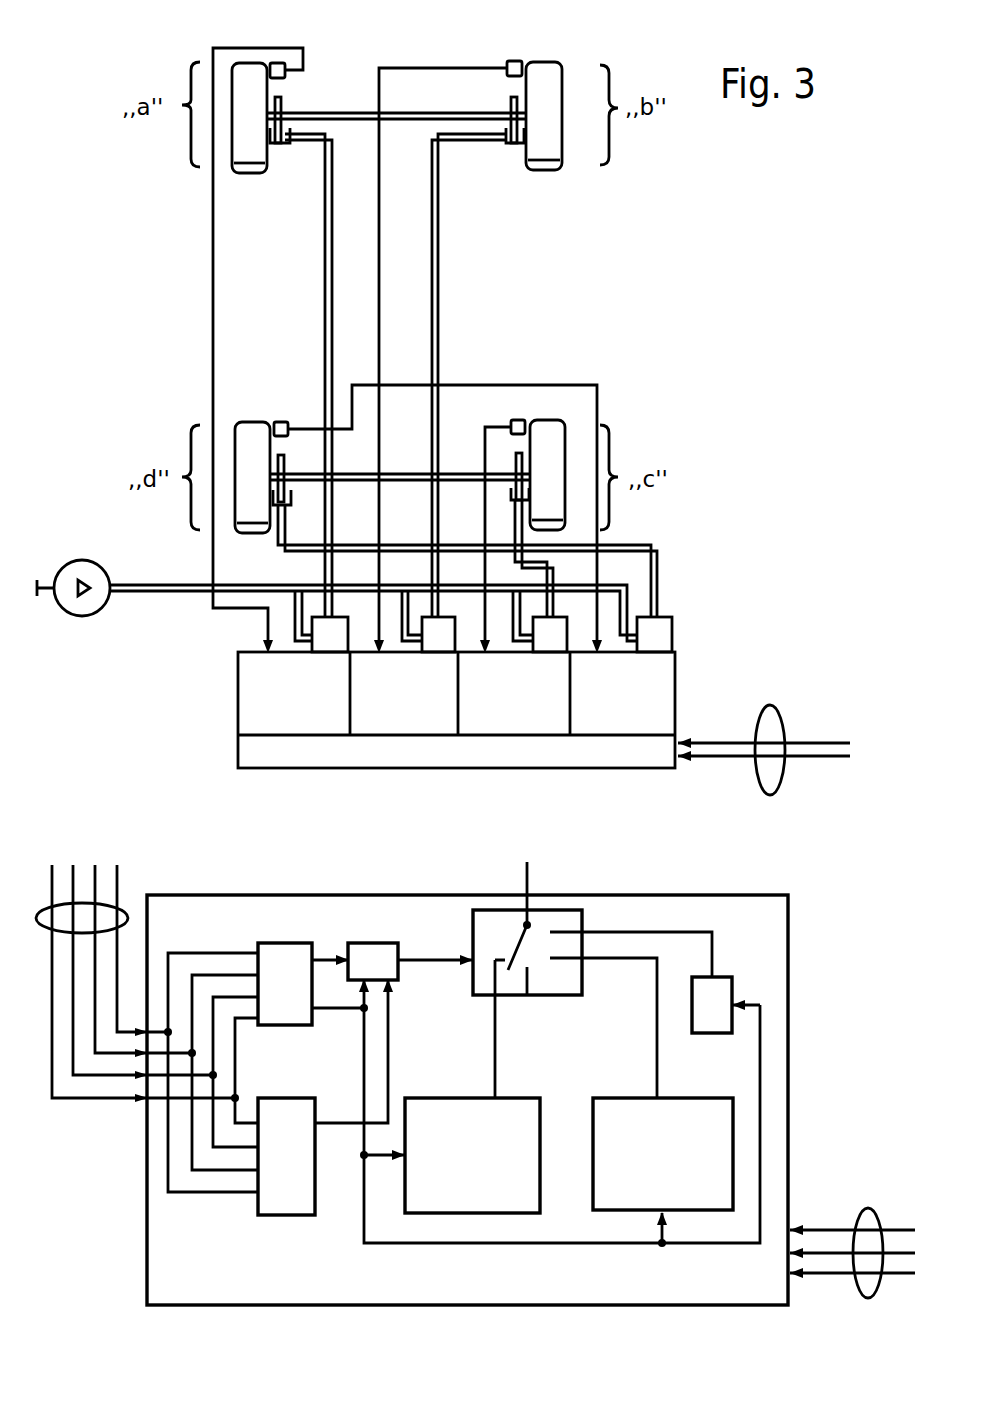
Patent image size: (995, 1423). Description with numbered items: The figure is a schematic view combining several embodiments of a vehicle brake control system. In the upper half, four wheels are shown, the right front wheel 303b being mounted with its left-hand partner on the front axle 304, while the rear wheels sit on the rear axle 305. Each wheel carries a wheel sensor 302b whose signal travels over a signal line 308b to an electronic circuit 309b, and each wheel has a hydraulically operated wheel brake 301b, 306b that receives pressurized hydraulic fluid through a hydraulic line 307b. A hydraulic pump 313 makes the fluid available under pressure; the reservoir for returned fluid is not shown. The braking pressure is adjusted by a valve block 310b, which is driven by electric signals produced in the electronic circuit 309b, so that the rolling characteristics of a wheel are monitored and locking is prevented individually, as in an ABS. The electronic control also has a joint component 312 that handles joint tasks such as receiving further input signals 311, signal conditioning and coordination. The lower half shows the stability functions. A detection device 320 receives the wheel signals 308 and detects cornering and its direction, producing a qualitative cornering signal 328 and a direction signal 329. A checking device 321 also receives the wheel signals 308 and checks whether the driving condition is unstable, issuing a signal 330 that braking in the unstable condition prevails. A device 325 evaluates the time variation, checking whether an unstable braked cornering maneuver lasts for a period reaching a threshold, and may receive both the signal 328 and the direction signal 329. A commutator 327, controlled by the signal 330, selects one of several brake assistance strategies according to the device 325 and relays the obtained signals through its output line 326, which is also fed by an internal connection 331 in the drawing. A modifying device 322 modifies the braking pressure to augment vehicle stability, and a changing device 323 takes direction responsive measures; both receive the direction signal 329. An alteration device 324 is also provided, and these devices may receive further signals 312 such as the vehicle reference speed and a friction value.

The wheel brake 301b is at (515, 145).
The wheel sensor 302b is at (515, 62).
The right front wheel 303b is at (545, 170).
The front axle 304 is at (342, 113).
The rear axle 305 is at (396, 474).
The wheel brake 306b is at (510, 100).
The hydraulic line 307b is at (438, 300).
The signal line 308b is at (379, 343).
The electronic circuit 309b is at (385, 730).
The valve block 310b is at (437, 640).
The further input signals 311 is at (770, 705).
The joint component 312 is at (245, 752).
The hydraulic pump 313 is at (82, 616).
The wheel signals 308 is at (122, 912).
The detection device 320 is at (276, 1020).
The checking device 321 is at (277, 1215).
The modifying device 322 is at (430, 1213).
The changing device 323 is at (618, 1210).
The alteration device 324 is at (718, 985).
The time variation evaluating device 325 is at (368, 943).
The output line 326 is at (527, 873).
The commutator 327 is at (555, 995).
The cornering signal 328 is at (322, 958).
The direction signal 329 is at (327, 1010).
The checking device signal 330 is at (388, 1070).
The signal line 331 is at (440, 962).